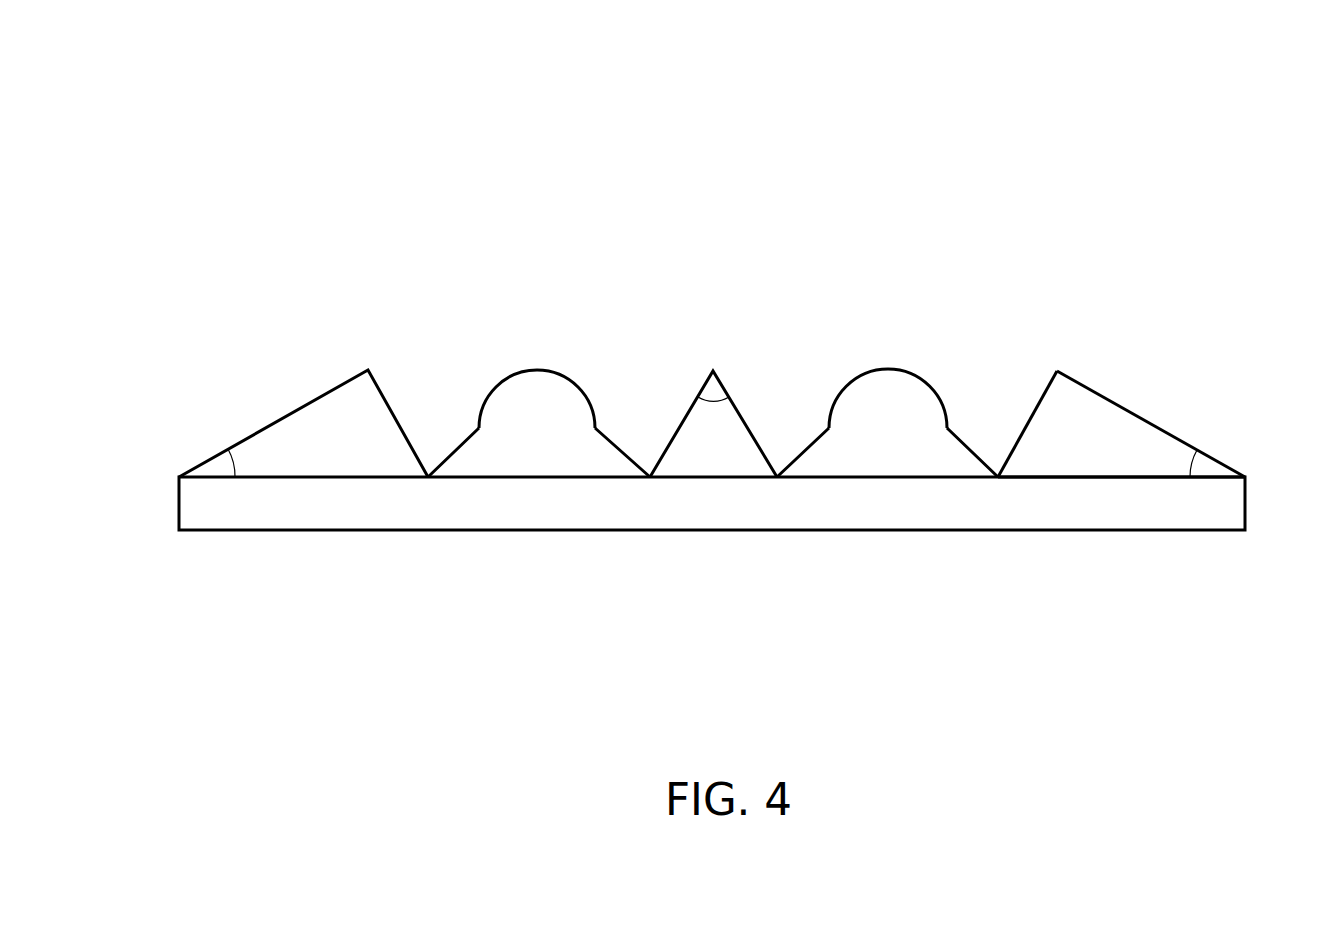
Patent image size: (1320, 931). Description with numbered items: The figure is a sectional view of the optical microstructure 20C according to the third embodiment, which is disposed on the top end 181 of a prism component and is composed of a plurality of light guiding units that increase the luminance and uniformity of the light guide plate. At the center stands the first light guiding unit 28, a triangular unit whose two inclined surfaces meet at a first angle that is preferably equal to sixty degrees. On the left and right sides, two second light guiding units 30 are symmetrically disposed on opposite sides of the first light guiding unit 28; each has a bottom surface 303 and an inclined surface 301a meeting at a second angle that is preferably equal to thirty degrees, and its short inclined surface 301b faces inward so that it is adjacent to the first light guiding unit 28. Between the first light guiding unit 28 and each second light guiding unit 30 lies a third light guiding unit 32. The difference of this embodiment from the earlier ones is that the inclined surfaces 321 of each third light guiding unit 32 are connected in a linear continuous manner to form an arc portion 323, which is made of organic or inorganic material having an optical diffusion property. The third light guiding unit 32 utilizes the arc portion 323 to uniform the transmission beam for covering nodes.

The optical microstructure 20C is at (1138, 108).
The top end 181 is at (743, 519).
The second light guiding unit 30 is at (328, 418).
The inclined surface 301a is at (1092, 385).
The short inclined surface 301b is at (1043, 393).
The bottom surface 303 is at (1093, 477).
The third light guiding unit 32 is at (655, 259).
The inclined surface 321 is at (459, 445).
The arc portion 323 is at (538, 368).
The first light guiding unit 28 is at (738, 442).